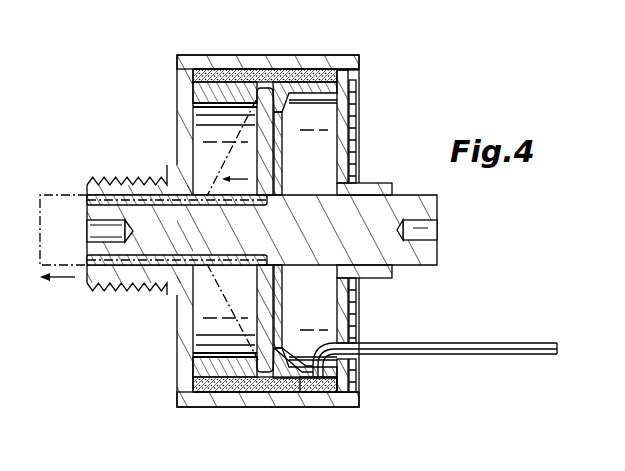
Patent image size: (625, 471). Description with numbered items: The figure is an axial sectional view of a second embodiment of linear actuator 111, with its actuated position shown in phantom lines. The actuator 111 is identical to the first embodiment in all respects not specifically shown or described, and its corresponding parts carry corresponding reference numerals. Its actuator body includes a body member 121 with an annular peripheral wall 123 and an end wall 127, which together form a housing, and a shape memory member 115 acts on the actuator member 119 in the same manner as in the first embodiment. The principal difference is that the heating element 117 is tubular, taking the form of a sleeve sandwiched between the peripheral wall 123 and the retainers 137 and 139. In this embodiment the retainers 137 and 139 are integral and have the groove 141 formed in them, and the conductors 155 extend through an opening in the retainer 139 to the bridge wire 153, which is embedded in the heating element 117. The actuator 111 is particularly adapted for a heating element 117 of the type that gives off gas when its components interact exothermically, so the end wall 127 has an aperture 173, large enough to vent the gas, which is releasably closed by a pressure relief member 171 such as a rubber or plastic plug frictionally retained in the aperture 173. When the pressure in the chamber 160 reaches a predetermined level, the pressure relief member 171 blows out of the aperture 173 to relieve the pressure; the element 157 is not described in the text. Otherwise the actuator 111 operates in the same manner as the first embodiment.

The actuator 111 is at (343, 52).
The shape memory member 115 is at (268, 296).
The heating element 117 is at (222, 392).
The actuator member 119 is at (113, 288).
The body member 121 is at (170, 88).
The peripheral wall 123 is at (222, 30).
The end wall 127 is at (343, 152).
The retainer 137 is at (198, 372).
The retainer 139 is at (357, 383).
The groove 141 is at (267, 58).
The bridge wire 153 is at (310, 390).
The conductors 155 is at (493, 344).
The electrode tab 157 is at (335, 368).
The chamber 160 is at (330, 320).
The pressure relief member 171 is at (345, 108).
The aperture 173 is at (345, 106).